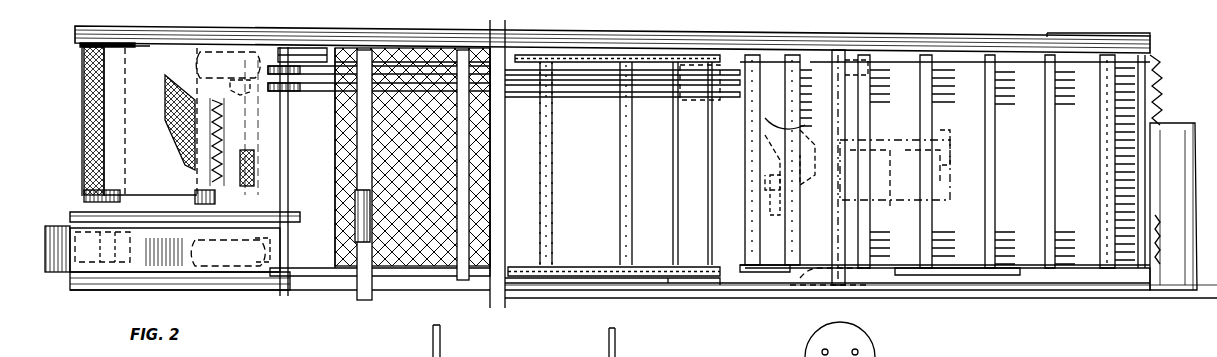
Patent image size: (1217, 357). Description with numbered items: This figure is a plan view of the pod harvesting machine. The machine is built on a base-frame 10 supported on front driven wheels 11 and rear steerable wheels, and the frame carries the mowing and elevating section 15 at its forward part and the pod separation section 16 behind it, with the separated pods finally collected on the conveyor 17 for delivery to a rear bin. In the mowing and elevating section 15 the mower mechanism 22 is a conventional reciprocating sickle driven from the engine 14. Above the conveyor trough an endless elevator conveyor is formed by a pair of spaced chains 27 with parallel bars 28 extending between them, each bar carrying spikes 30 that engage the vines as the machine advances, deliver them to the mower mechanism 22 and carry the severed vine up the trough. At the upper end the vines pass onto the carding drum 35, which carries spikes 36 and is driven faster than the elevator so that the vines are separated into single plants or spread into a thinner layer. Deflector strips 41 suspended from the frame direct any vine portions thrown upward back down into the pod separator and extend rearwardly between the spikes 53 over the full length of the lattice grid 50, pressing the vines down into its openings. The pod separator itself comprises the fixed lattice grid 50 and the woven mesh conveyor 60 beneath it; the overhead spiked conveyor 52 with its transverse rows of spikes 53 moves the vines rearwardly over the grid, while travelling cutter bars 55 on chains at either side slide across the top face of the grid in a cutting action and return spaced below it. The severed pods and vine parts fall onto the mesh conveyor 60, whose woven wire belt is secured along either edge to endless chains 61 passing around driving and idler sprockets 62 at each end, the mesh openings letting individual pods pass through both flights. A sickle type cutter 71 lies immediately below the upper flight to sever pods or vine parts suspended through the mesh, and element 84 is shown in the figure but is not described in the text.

The base-frame 10 is at (400, 280).
The front driven wheels 11 is at (812, 286).
The engine 14 is at (891, 167).
The mowing and elevating section 15 is at (1165, 258).
The pod separation section 16 is at (578, 167).
The conveyor 17 is at (145, 258).
The mower mechanism 22 is at (1160, 70).
The spaced chains 27 is at (960, 275).
The parallel bars 28 is at (988, 118).
The spikes 30 is at (1052, 235).
The carding drum 35 is at (775, 252).
The spikes 36 is at (766, 110).
The deflector strips 41 is at (299, 78).
The lattice grid 50 is at (350, 222).
The overhead spiked conveyor 52 is at (614, 62).
The spikes 53 is at (433, 343).
The travelling cutter bars 55 is at (360, 135).
The mesh conveyor 60 is at (100, 85).
The endless chains 61 is at (82, 47).
The driving and idler sprockets 62 is at (84, 196).
The sickle type cutter 71 is at (200, 133).
The bracket 84 is at (75, 250).